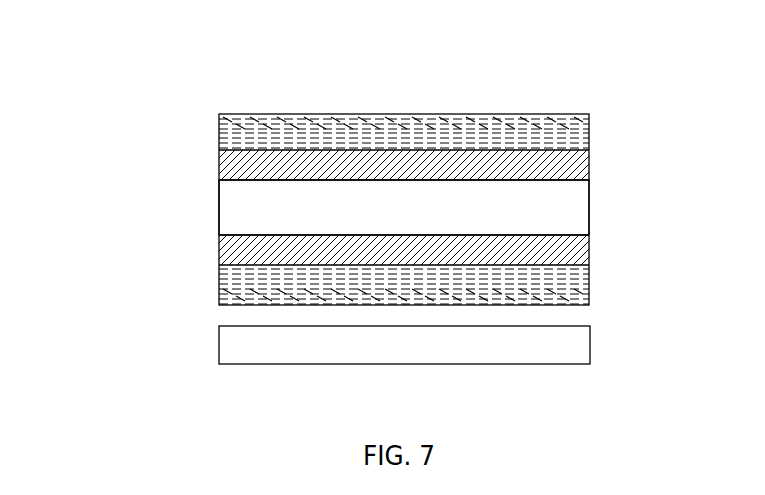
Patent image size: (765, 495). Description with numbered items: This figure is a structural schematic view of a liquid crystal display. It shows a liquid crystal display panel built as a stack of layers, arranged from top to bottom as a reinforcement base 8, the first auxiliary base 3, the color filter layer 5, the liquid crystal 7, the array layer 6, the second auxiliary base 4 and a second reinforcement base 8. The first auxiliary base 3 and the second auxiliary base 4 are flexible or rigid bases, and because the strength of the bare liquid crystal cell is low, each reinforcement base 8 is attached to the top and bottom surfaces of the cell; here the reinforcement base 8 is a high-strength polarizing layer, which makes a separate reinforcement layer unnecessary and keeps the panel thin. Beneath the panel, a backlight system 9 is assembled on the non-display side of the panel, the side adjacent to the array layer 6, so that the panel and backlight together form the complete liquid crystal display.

The first auxiliary base 3 is at (441, 124).
The second auxiliary base 4 is at (443, 296).
The color filter layer 5 is at (370, 151).
The array layer 6 is at (359, 264).
The liquid crystal 7 is at (366, 205).
The reinforcement base 8 is at (404, 247).
The backlight system 9 is at (404, 373).